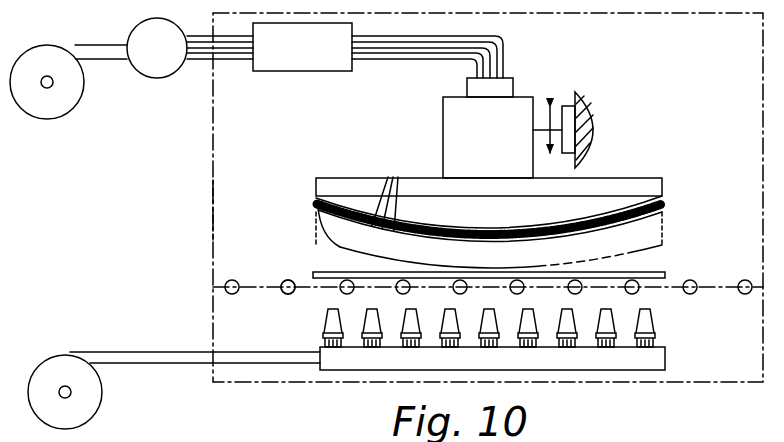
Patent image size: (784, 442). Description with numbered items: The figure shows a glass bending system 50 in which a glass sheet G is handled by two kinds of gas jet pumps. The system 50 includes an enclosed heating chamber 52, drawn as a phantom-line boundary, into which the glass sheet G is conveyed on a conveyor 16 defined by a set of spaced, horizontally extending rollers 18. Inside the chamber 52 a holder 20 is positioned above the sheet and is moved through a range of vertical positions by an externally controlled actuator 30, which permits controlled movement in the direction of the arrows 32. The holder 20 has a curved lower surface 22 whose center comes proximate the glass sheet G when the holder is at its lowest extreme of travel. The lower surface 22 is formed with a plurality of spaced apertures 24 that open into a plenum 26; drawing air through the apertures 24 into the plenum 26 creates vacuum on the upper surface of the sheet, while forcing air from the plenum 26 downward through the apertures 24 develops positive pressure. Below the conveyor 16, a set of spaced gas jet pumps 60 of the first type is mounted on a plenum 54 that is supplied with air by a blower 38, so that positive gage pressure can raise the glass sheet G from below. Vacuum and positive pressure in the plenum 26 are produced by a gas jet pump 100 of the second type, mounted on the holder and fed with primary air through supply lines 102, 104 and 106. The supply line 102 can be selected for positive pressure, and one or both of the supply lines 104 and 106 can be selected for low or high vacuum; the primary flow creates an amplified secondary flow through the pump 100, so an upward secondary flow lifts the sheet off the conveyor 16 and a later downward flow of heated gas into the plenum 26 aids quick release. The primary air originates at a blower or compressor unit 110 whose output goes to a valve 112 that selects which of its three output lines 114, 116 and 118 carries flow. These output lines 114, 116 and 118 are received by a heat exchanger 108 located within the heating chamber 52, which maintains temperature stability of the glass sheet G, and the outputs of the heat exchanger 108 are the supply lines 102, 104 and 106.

The conveyor 16 is at (224, 281).
The rollers 18 is at (283, 293).
The holder 20 is at (314, 208).
The curved lower surface 22 is at (360, 266).
The apertures 24 is at (391, 192).
The plenum 26 is at (625, 196).
The actuator 30 is at (588, 132).
The arrows 32 is at (553, 108).
The blower 38 is at (69, 366).
The glass bending system 50 is at (208, 181).
The enclosed heating chamber 52 is at (213, 210).
The plenum 54 is at (663, 352).
The gas jet pumps 60 is at (324, 322).
The gas jet pump 100 is at (440, 118).
The supply line 102 is at (498, 36).
The supply line 104 is at (416, 62).
The supply line 106 is at (380, 62).
The heat exchanger 108 is at (300, 72).
The blower or compressor unit 110 is at (49, 112).
The valve 112 is at (131, 36).
The output line 114 is at (239, 63).
The output line 116 is at (207, 62).
The output line 118 is at (191, 62).
The glass sheet G is at (660, 272).